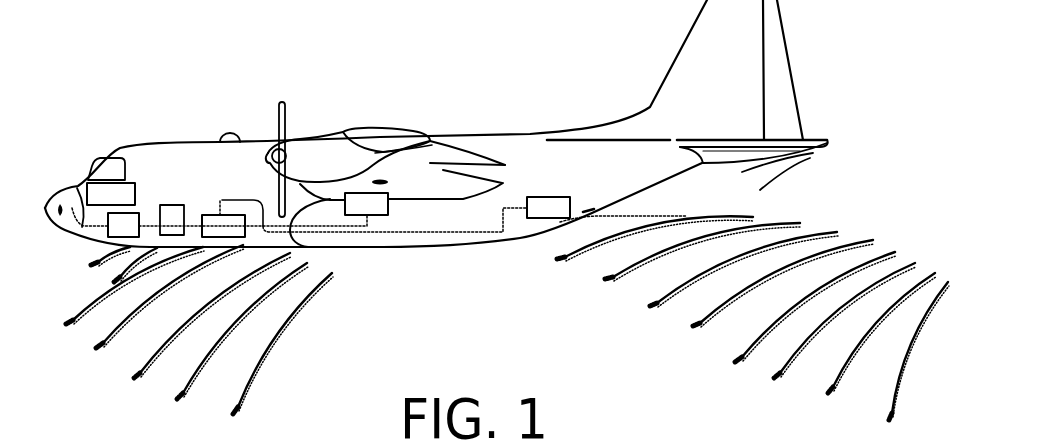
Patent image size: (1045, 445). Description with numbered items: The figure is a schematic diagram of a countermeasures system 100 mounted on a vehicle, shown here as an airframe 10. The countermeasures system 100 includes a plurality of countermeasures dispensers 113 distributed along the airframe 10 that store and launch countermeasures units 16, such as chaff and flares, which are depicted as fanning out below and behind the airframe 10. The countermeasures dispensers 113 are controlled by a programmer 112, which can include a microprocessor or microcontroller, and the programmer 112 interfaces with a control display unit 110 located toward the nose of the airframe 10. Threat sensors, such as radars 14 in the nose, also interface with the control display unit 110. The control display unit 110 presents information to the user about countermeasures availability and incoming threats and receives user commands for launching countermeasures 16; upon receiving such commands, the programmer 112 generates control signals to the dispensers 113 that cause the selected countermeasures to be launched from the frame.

The countermeasures system 100 is at (138, 74).
The airframe 10 is at (188, 141).
The radar 14 is at (61, 200).
The countermeasures units 16 is at (286, 338).
The control display unit 110 is at (152, 172).
The programmer 112 is at (140, 218).
The countermeasures dispensers 113 is at (236, 215).